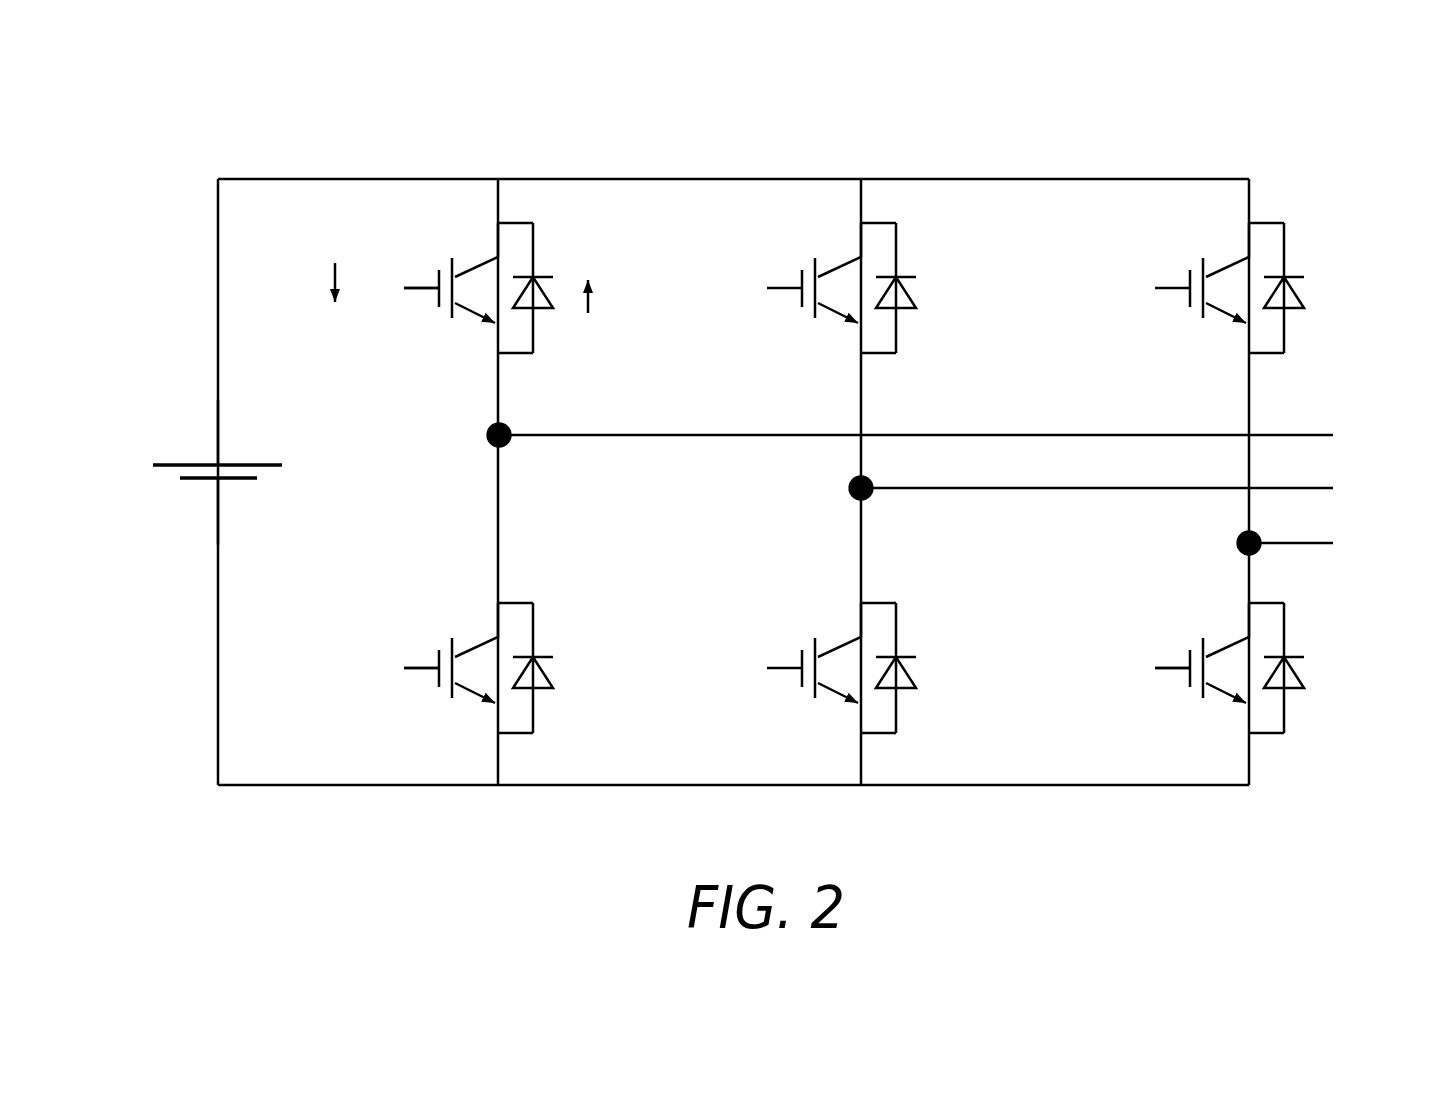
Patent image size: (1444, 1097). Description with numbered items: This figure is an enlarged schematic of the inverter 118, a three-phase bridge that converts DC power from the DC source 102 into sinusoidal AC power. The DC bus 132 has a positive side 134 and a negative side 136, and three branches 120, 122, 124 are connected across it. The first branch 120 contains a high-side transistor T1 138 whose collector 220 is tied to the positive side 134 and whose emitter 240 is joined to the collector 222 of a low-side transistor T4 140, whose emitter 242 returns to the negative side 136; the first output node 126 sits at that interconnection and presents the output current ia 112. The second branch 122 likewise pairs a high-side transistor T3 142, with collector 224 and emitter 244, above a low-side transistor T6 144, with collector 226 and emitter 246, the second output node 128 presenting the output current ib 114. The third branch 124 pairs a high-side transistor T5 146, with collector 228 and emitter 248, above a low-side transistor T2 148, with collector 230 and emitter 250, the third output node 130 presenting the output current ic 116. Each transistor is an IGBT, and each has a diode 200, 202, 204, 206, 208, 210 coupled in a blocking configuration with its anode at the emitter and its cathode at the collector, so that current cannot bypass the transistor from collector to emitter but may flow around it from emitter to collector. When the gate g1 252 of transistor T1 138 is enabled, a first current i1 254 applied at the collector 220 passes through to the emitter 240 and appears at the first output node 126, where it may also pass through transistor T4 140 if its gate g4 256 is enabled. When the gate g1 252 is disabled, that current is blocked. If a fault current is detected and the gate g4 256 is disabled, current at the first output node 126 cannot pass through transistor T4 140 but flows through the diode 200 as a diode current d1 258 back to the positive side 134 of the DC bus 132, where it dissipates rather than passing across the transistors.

The DC voltage source 102 is at (178, 464).
The output current i_a 112 is at (1317, 407).
The output current i_b 114 is at (1317, 465).
The output current i_c 116 is at (1317, 517).
The inverter 118 is at (1318, 151).
The first branch 120 is at (498, 217).
The second branch 122 is at (861, 217).
The third branch 124 is at (1249, 217).
The first output node 126 is at (512, 428).
The second output node 128 is at (874, 482).
The third output node 130 is at (1240, 535).
The DC bus 132 is at (218, 332).
The positive side of the DC bus 134 is at (206, 426).
The negative side of the DC bus 136 is at (206, 518).
The high-side transistor T1 138 is at (432, 258).
The low-side transistor T4 140 is at (432, 637).
The high-side transistor T3 142 is at (795, 258).
The low-side transistor T6 144 is at (795, 637).
The high-side transistor T5 146 is at (1186, 258).
The low-side transistor T2 148 is at (1186, 637).
The diode 200 is at (537, 277).
The diode 202 is at (537, 655).
The diode 204 is at (900, 277).
The diode 206 is at (900, 655).
The diode 208 is at (1288, 277).
The diode 210 is at (1286, 657).
The collector 220 is at (497, 223).
The collector 222 is at (498, 602).
The collector 224 is at (861, 223).
The collector 226 is at (861, 602).
The collector 228 is at (1249, 223).
The collector 230 is at (1248, 603).
The emitter 240 is at (498, 353).
The emitter 242 is at (498, 733).
The emitter 244 is at (861, 356).
The emitter 246 is at (861, 733).
The emitter 248 is at (1249, 356).
The emitter 250 is at (1248, 733).
The gate g1 252 is at (420, 292).
The first current i1 254 is at (333, 277).
The gate g4 256 is at (421, 672).
The diode current d1 258 is at (596, 293).